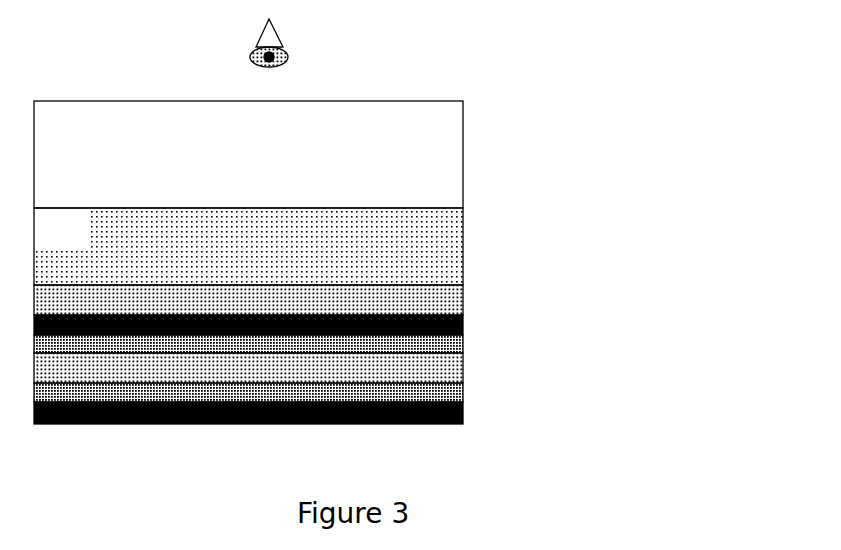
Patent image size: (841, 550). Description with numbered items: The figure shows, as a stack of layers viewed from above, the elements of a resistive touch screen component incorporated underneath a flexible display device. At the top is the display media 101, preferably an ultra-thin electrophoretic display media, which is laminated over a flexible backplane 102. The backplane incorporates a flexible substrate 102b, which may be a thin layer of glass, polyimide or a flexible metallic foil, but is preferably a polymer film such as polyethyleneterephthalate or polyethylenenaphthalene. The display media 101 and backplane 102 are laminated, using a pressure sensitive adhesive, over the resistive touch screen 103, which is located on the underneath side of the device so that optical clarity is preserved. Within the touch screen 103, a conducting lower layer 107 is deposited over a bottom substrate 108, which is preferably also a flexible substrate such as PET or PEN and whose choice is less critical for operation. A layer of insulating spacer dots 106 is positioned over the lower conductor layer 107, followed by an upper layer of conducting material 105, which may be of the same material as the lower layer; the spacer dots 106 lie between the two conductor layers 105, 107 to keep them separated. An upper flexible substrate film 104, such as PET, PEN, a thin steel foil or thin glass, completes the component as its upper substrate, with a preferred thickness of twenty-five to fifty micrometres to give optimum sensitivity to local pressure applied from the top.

The display media 101 is at (446, 150).
The flexible backplane 102 is at (356, 256).
The flexible substrate 102b is at (463, 297).
The resistive touch screen 103 is at (416, 370).
The upper flexible substrate film 104 is at (463, 325).
The upper layer of conducting material 105 is at (463, 344).
The insulating spacer dots 106 is at (463, 363).
The conducting lower layer 107 is at (463, 393).
The bottom substrate 108 is at (463, 413).